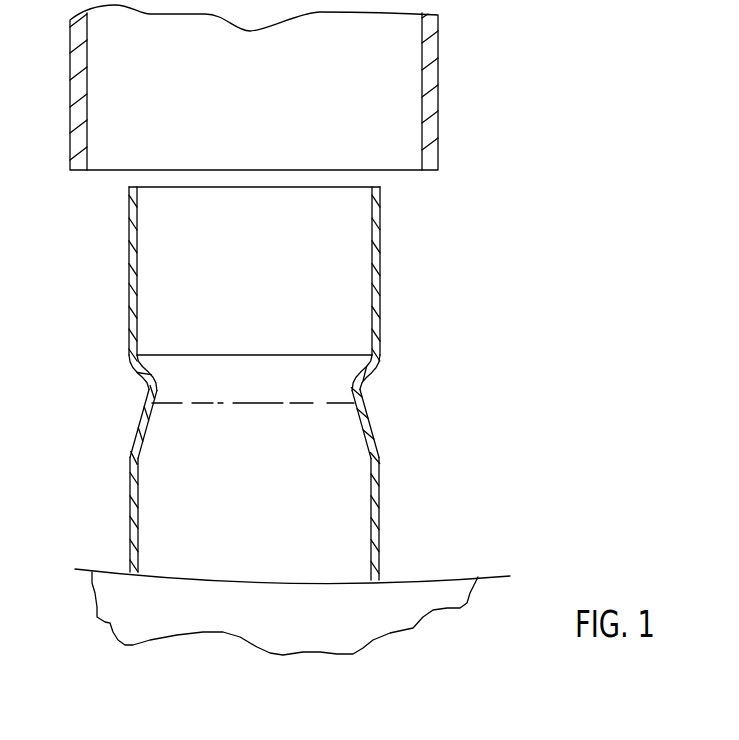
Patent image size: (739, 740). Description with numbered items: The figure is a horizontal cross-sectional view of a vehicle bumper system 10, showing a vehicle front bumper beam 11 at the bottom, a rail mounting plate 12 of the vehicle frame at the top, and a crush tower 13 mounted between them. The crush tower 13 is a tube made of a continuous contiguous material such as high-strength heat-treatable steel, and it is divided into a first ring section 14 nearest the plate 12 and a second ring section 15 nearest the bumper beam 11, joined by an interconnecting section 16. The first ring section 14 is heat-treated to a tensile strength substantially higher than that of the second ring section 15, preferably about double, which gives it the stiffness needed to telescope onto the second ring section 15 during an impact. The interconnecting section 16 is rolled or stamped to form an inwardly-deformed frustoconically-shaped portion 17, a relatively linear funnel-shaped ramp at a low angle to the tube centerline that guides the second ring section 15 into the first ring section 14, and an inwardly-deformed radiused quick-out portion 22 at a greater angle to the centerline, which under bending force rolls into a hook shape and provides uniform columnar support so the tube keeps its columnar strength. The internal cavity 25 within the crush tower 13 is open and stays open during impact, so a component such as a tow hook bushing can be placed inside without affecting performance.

The vehicle bumper system 10 is at (572, 147).
The vehicle front bumper beam 11 is at (461, 566).
The rail mounting plate 12 is at (452, 95).
The crush tower 13 is at (237, 383).
The first ring section 14 is at (380, 222).
The second ring section 15 is at (382, 508).
The interconnecting section 16 is at (364, 428).
The frustoconically-shaped portion 17 is at (357, 425).
The quick-out portion 22 is at (350, 358).
The internal cavity 25 is at (282, 286).